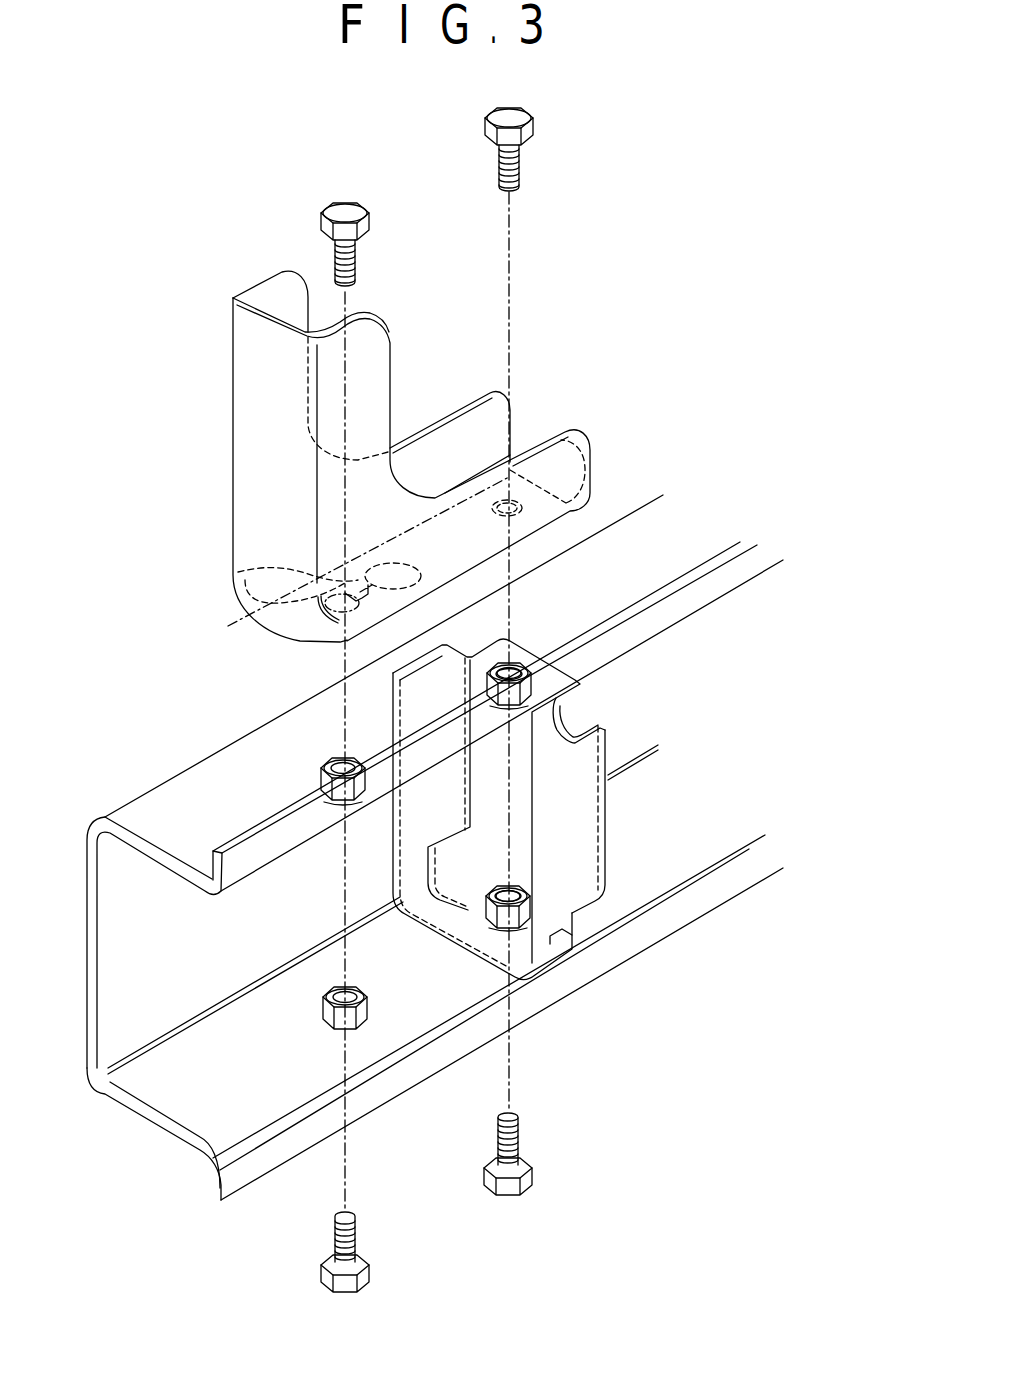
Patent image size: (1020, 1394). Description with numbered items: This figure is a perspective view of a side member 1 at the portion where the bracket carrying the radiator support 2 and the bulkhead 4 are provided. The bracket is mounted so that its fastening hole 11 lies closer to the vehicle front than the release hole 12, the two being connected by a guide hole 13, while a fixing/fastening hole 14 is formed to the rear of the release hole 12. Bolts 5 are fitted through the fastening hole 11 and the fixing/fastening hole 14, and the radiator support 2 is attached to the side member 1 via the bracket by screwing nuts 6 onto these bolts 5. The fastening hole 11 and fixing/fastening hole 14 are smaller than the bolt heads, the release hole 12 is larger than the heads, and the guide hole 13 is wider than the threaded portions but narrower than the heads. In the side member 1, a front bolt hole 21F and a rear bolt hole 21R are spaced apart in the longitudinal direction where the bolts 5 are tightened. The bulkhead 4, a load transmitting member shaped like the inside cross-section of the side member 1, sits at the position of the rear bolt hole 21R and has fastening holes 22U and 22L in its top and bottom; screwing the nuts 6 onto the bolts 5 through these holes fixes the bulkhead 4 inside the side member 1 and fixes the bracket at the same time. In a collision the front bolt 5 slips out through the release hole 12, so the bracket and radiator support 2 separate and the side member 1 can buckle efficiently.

The side member 1 is at (177, 1110).
The radiator support 2 is at (708, 190).
The bulkhead 4 is at (585, 860).
The bolt 5 is at (345, 211).
The nut 6 is at (545, 908).
The fastening hole 11 is at (326, 595).
The release hole 12 is at (388, 563).
The guide hole 13 is at (238, 572).
The fixing/fastening hole 14 is at (572, 495).
The front bolt hole 21F is at (337, 758).
The rear bolt hole 21R is at (515, 665).
The fastening hole 22U is at (512, 668).
The fastening hole 22L is at (490, 917).